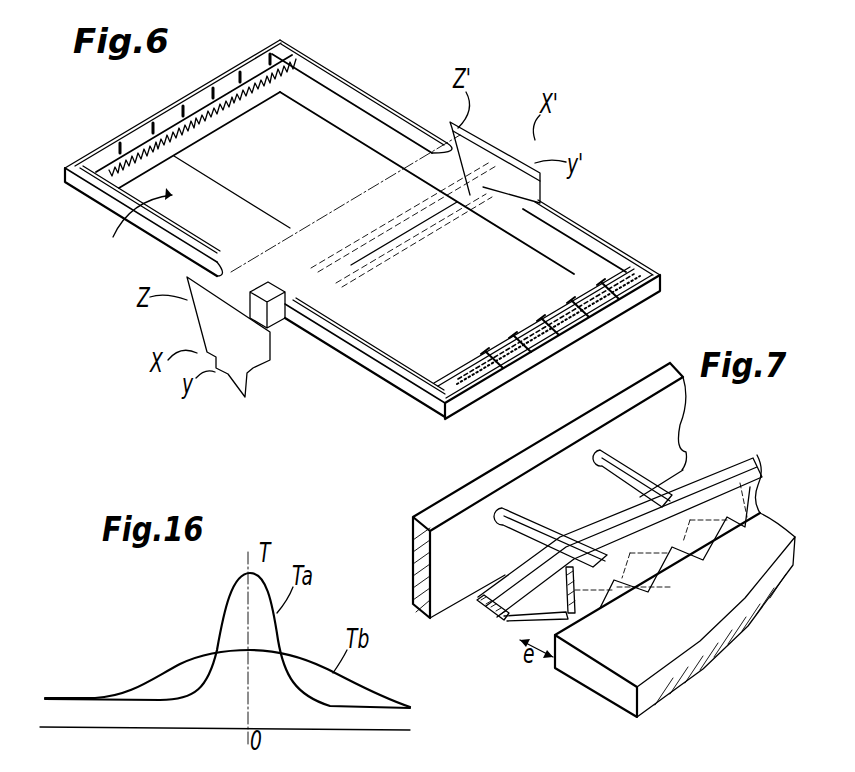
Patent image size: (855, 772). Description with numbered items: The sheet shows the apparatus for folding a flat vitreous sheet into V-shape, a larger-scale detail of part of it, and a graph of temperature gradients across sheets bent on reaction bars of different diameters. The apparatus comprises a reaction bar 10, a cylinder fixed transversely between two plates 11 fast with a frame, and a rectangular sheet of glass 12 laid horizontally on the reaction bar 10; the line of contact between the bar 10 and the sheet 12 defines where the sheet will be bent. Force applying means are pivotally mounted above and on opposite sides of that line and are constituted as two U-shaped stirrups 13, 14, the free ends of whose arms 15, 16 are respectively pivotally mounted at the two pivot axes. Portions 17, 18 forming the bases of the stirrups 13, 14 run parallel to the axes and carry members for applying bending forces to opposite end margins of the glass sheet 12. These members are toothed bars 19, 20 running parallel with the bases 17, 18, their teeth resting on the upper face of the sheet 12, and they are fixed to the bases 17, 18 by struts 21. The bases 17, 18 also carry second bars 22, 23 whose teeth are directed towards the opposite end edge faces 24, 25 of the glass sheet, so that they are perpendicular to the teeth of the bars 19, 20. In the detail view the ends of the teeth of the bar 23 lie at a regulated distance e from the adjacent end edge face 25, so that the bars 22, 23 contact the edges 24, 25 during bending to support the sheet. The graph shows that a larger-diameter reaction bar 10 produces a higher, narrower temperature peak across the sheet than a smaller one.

In FIG. 6, the reaction bar 10 is at (266, 306).
In FIG. 6, the plates 11 is at (190, 322).
In FIG. 6, the sheet of glass 12 is at (136, 220).
In FIG. 7, the sheet of glass 12 is at (613, 657).
In FIG. 6, the stirrup 13 is at (617, 250).
In FIG. 6, the stirrup 14 is at (338, 79).
In FIG. 6, the arms of stirrup 15 is at (353, 358).
In FIG. 6, the arms of stirrup 16 is at (377, 100).
In FIG. 6, the base of stirrup 17 is at (661, 290).
In FIG. 6, the base of stirrup 18 is at (84, 162).
In FIG. 7, the base of stirrup 18 is at (447, 542).
In FIG. 6, the toothed bar 19 is at (529, 334).
In FIG. 6, the toothed bar 20 is at (170, 122).
In FIG. 7, the toothed bar 20 is at (758, 460).
In FIG. 7, the struts 21 is at (515, 505).
In FIG. 6, the second bar 22 is at (633, 290).
In FIG. 6, the second bar 23 is at (97, 160).
In FIG. 7, the second bar 23 is at (495, 605).
In FIG. 6, the end edge face of glass sheet 24 is at (637, 320).
In FIG. 6, the end edge face of glass sheet 25 is at (98, 193).
In FIG. 7, the end edge face of glass sheet 25 is at (573, 620).